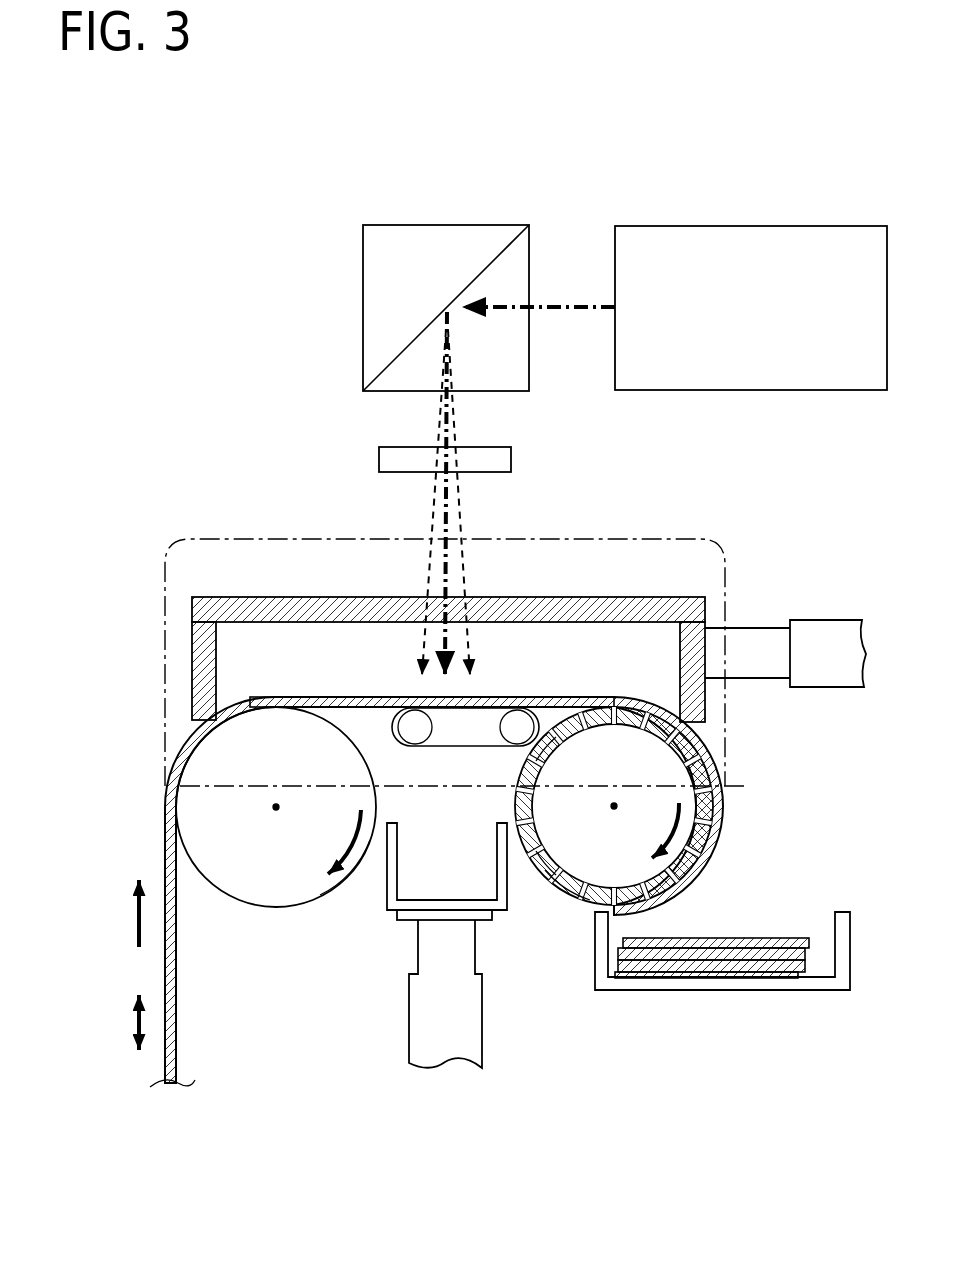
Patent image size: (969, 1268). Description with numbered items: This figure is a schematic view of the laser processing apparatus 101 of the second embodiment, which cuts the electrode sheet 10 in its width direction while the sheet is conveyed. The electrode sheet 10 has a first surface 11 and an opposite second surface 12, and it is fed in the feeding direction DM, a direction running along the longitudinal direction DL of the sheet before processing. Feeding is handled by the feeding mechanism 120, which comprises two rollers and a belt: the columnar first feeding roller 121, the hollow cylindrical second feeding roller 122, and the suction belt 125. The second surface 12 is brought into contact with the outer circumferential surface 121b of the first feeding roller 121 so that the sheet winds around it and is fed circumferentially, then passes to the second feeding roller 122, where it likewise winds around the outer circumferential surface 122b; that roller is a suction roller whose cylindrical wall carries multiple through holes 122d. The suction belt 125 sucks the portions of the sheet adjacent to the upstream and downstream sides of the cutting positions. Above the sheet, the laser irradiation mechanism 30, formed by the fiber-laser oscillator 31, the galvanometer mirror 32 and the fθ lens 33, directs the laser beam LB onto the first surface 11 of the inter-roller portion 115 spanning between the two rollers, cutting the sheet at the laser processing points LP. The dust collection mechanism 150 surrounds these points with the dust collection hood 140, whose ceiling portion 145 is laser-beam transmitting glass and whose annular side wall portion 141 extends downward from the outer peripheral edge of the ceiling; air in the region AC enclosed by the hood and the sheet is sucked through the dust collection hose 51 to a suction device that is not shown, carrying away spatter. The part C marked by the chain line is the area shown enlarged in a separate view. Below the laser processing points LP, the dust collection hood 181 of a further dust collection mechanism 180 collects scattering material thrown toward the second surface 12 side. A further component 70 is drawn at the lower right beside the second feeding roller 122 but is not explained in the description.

The laser processing apparatus 101 is at (240, 222).
The laser irradiation mechanism 30 is at (726, 214).
The fiber-laser oscillator 31 is at (753, 325).
The galvanometer mirror 32 is at (363, 333).
The fθ lens 33 is at (379, 458).
The laser beam LB is at (575, 305).
The part C is at (253, 538).
The region AC is at (256, 640).
The dust collection hood 140 is at (186, 638).
The ceiling portion 145 is at (350, 597).
The side wall portion 141 is at (200, 690).
The electrode sheet 10 is at (723, 783).
The inter-roller portion 115 is at (377, 697).
The first surface 11 is at (165, 964).
The second surface 12 is at (176, 964).
The feeding direction DM is at (118, 913).
The longitudinal direction DL is at (119, 1022).
The feeding mechanism 120 is at (304, 915).
The first feeding roller 121 is at (272, 893).
The outer circumferential surface 121b is at (348, 880).
The suction belt 125 is at (445, 748).
The laser processing point LP is at (490, 706).
The second feeding roller 122 is at (607, 912).
The through holes 122d is at (562, 756).
The outer circumferential surface 122b is at (560, 872).
The dust collection mechanism 180 is at (470, 945).
The dust collection hood 181 is at (395, 872).
The tray 70 is at (848, 912).
The dust collection mechanism 150 is at (742, 612).
The dust collection hose 51 is at (836, 620).